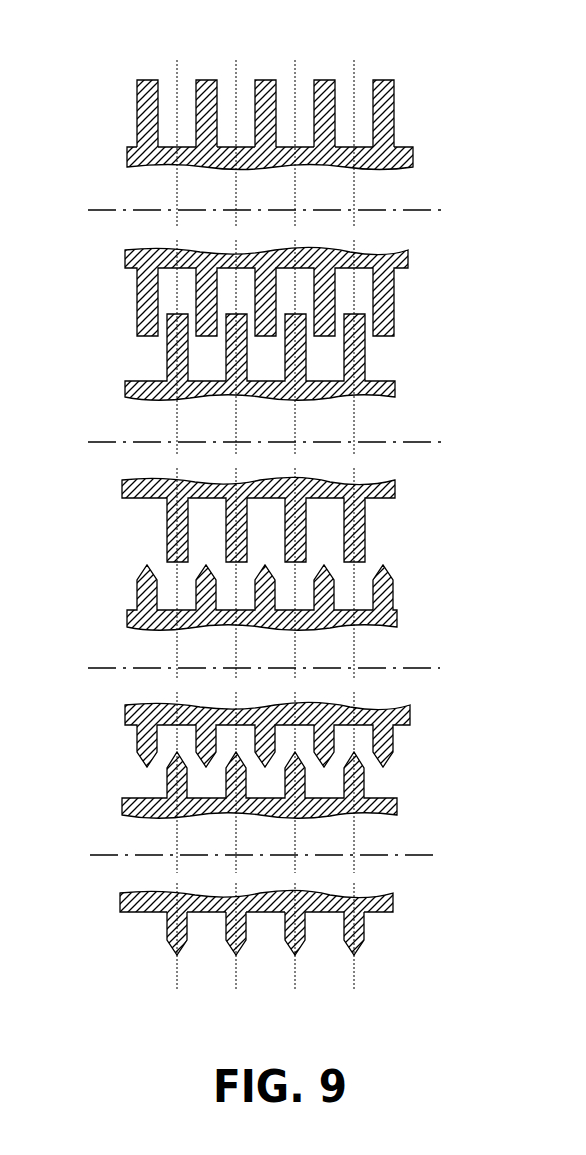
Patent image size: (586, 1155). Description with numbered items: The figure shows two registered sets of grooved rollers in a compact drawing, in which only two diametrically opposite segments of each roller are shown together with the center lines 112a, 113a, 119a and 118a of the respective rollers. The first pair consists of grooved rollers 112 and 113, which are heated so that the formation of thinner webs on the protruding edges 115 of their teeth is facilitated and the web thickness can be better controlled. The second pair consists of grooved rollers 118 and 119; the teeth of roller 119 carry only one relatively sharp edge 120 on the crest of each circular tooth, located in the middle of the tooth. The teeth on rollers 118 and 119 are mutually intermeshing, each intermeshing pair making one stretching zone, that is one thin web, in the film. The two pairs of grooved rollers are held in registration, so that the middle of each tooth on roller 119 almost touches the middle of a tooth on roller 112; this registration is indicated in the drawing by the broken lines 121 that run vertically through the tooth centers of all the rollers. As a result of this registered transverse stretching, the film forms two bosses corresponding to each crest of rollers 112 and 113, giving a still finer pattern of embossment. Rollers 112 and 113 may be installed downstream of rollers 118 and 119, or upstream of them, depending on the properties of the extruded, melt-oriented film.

The grooved roller 112 is at (425, 486).
The center line of roller 112 112a is at (298, 445).
The grooved roller 113 is at (256, 298).
The center line of roller 113 113a is at (298, 212).
The protruding edges 115 is at (385, 543).
The grooved roller 118 is at (294, 873).
The center line of roller 118 118a is at (288, 858).
The grooved roller 119 is at (440, 718).
The center line of roller 119 119a is at (294, 668).
The sharp edge 120 is at (380, 970).
The broken lines 121 is at (375, 656).